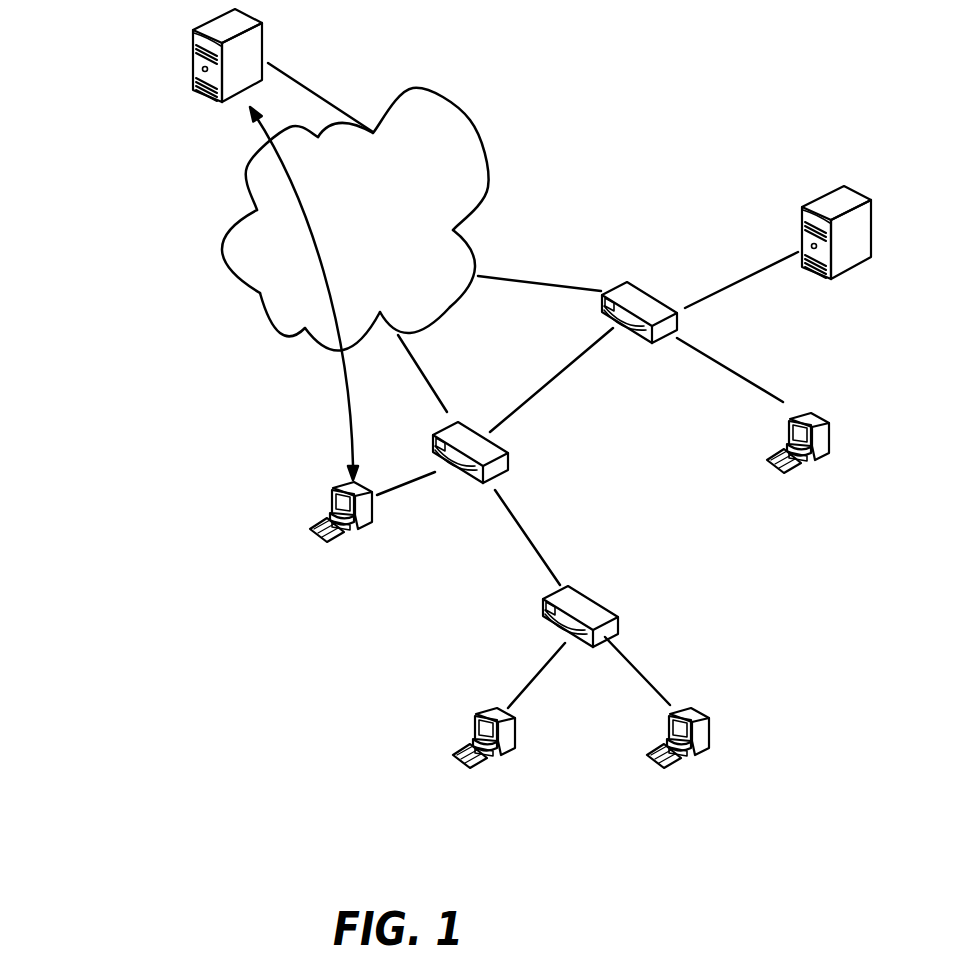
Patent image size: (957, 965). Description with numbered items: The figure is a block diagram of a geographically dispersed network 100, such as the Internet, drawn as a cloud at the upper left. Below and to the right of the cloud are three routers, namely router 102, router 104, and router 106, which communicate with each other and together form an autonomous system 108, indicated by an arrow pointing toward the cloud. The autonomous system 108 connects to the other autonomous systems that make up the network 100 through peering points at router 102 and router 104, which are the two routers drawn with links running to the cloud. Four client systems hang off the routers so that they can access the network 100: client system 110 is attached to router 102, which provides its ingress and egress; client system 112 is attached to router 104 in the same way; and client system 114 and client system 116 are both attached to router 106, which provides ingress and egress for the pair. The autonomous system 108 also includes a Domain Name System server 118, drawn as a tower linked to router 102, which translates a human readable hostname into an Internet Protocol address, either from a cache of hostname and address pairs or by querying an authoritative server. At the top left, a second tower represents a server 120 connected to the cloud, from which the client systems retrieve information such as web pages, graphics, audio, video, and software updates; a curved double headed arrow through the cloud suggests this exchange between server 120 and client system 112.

The geographically dispersed network 100 is at (196, 269).
The router 102 is at (647, 295).
The router 104 is at (482, 488).
The router 106 is at (543, 607).
The autonomous system 108 is at (610, 161).
The client system 110 is at (790, 423).
The client system 112 is at (332, 490).
The client system 114 is at (478, 713).
The client system 116 is at (670, 713).
The Domain Name System (DNS) server 118 is at (820, 213).
The server 120 is at (207, 30).